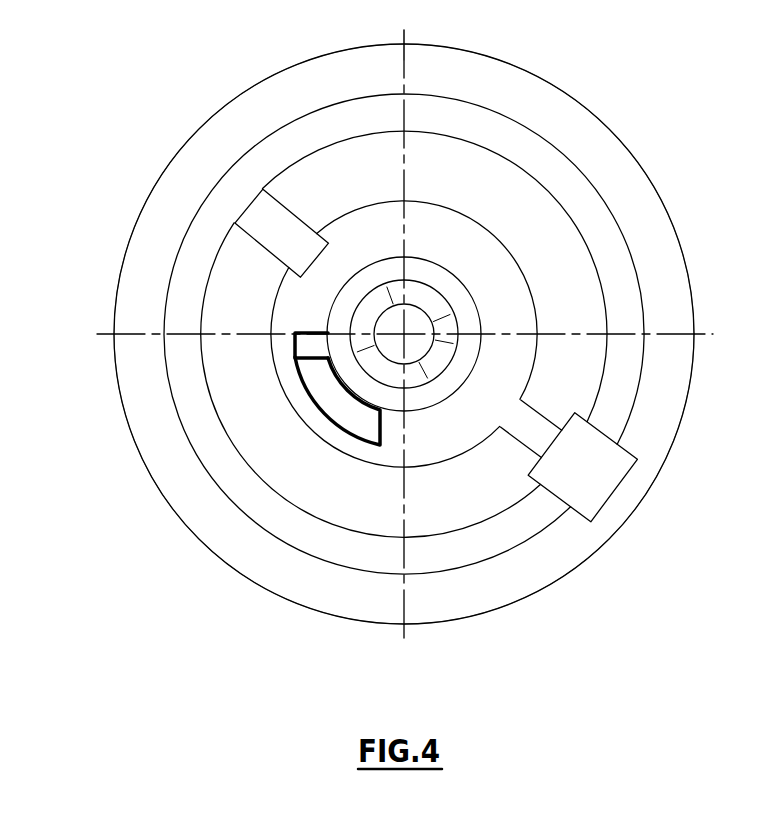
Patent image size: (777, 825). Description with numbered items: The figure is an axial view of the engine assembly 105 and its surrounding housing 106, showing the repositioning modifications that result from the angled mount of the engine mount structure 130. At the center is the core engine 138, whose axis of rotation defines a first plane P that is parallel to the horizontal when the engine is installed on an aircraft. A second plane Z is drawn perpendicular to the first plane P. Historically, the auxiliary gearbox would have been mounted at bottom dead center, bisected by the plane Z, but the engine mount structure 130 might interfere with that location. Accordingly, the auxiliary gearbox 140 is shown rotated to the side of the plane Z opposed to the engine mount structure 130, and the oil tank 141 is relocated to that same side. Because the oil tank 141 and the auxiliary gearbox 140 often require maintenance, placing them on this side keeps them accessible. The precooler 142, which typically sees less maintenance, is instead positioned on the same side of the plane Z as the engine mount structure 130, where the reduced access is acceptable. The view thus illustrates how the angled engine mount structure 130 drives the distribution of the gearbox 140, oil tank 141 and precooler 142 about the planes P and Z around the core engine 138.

The assembly 105 is at (155, 112).
The housing 106 is at (128, 190).
The first plane P is at (183, 335).
The second plane Z is at (402, 34).
The core engine 138 is at (420, 295).
The engine mount structure 130 is at (530, 416).
The precooler 142 is at (595, 488).
The auxiliary gearbox 140 is at (315, 387).
The oil tank 141 is at (302, 343).